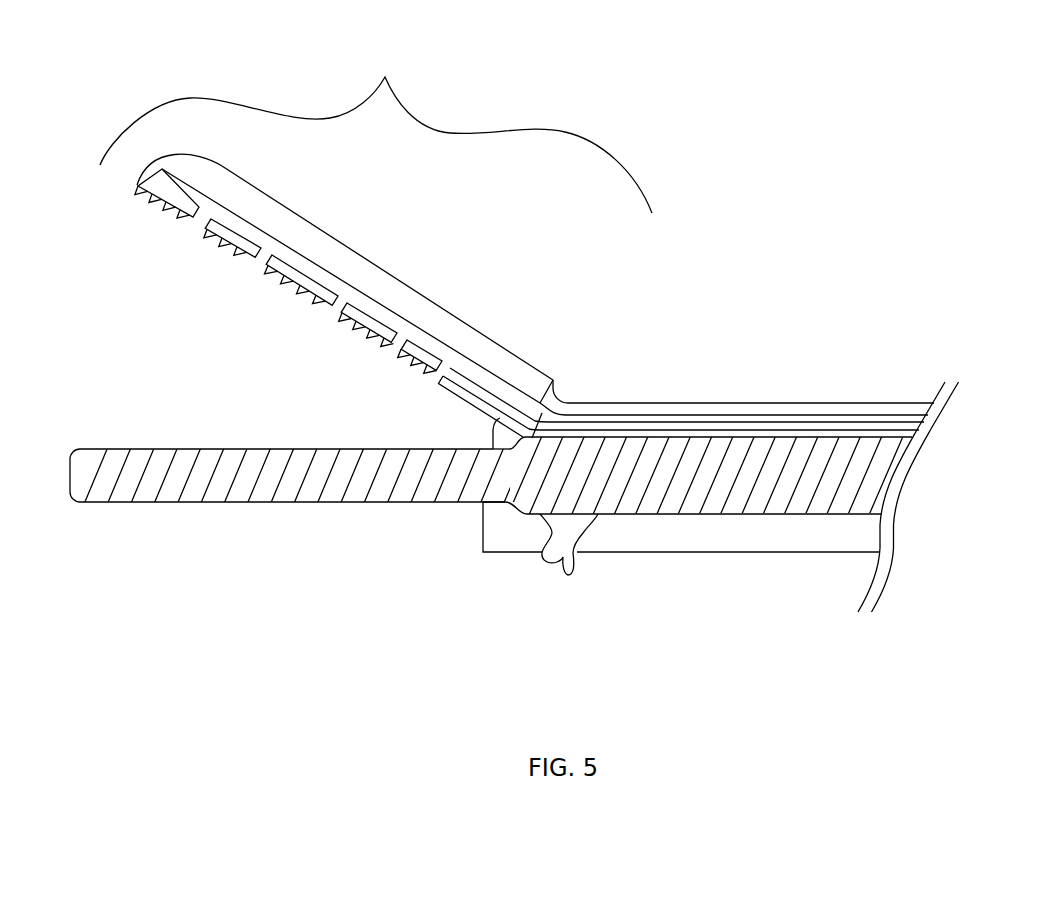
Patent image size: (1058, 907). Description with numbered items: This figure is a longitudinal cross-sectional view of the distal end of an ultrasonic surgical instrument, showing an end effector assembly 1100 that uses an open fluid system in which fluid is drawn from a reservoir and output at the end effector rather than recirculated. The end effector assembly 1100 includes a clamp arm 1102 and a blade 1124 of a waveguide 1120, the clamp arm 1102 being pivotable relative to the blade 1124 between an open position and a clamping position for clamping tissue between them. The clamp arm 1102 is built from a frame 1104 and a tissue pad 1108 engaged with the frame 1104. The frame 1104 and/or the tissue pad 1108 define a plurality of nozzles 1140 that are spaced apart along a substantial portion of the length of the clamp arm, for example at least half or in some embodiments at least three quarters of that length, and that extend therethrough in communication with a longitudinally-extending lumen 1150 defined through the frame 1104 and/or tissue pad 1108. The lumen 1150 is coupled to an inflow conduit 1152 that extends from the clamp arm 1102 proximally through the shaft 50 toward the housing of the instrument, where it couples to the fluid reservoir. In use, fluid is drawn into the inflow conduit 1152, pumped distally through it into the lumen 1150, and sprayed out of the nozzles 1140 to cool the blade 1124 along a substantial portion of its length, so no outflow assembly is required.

The end effector assembly 1100 is at (376, 123).
The clamp arm 1102 is at (223, 303).
The frame 1104 is at (467, 333).
The tissue pad 1108 is at (416, 355).
The waveguide 1120 is at (743, 477).
The blade 1124 is at (252, 483).
The nozzles 1140 is at (264, 258).
The longitudinally-extending lumen 1150 is at (192, 199).
The inflow conduit 1152 is at (665, 425).
The shaft 50 is at (718, 543).